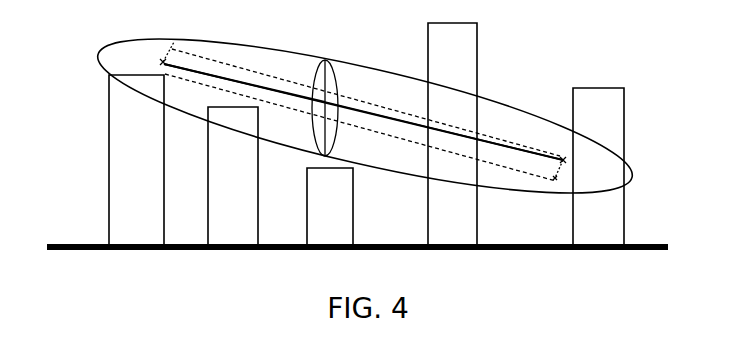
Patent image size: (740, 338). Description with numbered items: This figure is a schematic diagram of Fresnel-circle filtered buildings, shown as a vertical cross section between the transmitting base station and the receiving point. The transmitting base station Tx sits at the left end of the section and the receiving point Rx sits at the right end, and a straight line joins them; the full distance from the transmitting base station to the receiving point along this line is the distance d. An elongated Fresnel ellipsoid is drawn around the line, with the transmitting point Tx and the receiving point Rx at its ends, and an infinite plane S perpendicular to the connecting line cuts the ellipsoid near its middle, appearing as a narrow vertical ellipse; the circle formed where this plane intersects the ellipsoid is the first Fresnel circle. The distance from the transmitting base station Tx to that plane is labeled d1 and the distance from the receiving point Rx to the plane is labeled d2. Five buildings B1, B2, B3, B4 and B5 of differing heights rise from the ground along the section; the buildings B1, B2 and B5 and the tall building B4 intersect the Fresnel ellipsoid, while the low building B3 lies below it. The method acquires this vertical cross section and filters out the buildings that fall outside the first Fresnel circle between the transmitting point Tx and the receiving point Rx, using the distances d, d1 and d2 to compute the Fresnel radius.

The building 1 B1 is at (136, 161).
The building 2 B2 is at (233, 177).
The building 3 B3 is at (330, 207).
The building 4 B4 is at (452, 135).
The building 5 B5 is at (598, 167).
The transmitter Tx is at (158, 55).
The receiver Rx is at (554, 162).
The distance between the transmitting base station and the plane S d1 is at (244, 83).
The distance between the receiving point and the plane S d2 is at (444, 131).
The distance from the transmitting base station to the receiving point d is at (363, 112).